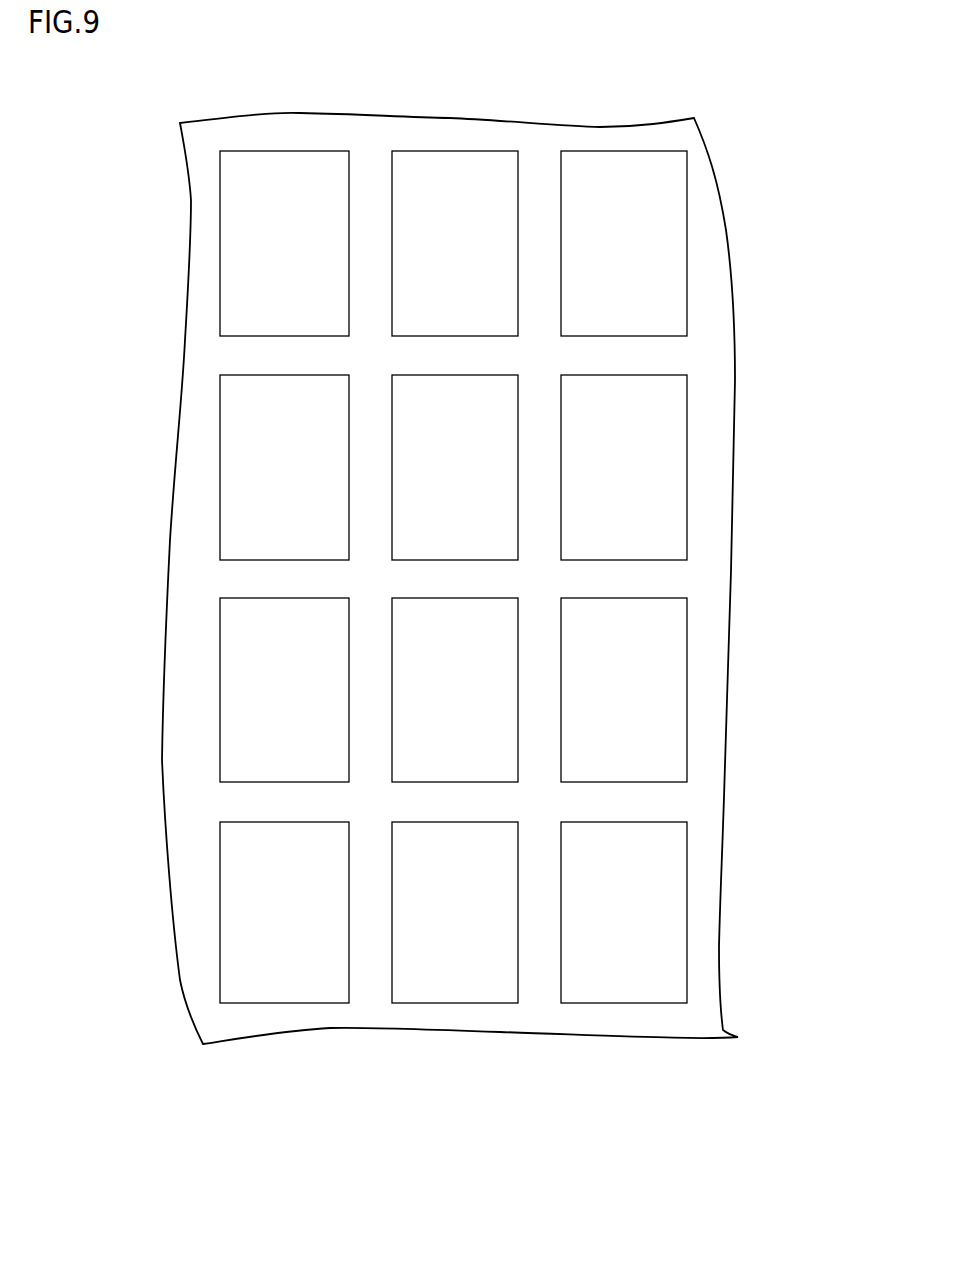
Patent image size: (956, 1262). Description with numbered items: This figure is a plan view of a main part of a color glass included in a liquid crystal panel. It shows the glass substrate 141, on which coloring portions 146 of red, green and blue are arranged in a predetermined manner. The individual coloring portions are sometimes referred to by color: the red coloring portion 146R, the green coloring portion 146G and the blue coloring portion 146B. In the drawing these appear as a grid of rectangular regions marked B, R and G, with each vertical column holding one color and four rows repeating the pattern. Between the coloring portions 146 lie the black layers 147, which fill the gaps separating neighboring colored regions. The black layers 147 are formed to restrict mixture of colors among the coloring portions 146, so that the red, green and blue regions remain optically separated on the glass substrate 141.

The glass substrate 141 is at (764, 192).
The coloring portions 146 is at (522, 634).
The blue coloring portion 146B is at (307, 982).
The red coloring portion 146R is at (463, 982).
The green coloring portion 146G is at (617, 982).
The black layers 147 is at (672, 572).